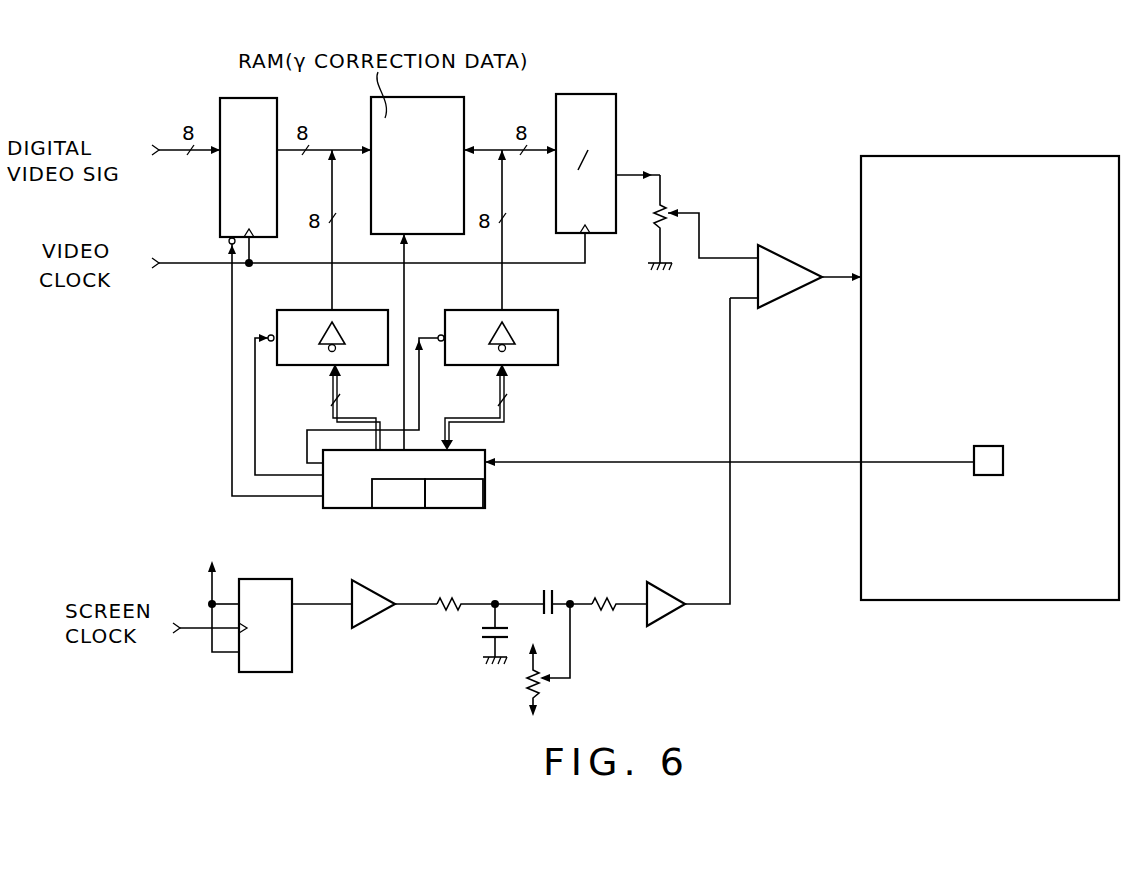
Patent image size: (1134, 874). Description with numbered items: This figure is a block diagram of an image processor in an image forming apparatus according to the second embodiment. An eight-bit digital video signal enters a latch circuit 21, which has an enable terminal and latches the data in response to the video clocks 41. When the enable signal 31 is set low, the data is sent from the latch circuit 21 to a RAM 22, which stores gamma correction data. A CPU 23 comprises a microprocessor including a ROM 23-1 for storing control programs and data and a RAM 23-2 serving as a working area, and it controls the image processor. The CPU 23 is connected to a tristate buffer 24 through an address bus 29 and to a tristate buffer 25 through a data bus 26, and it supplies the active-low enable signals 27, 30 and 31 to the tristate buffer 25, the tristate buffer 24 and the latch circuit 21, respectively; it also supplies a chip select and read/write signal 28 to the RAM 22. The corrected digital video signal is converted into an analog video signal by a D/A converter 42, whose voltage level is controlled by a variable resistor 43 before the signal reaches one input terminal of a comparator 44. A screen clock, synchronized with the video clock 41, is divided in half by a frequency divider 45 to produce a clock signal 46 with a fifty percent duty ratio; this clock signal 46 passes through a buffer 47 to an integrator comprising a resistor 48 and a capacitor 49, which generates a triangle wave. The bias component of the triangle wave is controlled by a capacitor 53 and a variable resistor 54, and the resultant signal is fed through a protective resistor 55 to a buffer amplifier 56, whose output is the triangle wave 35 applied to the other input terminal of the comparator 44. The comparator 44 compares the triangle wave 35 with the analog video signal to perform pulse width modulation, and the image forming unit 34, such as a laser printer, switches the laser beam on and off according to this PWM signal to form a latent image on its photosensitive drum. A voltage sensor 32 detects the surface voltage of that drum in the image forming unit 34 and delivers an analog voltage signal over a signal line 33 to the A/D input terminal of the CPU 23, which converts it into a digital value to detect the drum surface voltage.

The latch circuit 21 is at (255, 98).
The RAM 22 is at (433, 97).
The CPU 23 is at (343, 510).
The ROM 23-1 is at (397, 510).
The RAM 23-2 is at (463, 510).
The tristate buffer 24 is at (316, 310).
The tristate buffer 25 is at (528, 310).
The data bus 26 is at (512, 398).
The enable signal 27 is at (422, 402).
The chip select and read/write signal 28 is at (406, 282).
The address bus 29 is at (344, 408).
The enable signal 30 is at (256, 412).
The enable signal 31 is at (257, 500).
The voltage sensor 32 is at (988, 477).
The signal line 33 is at (812, 466).
The image forming unit 34 is at (993, 602).
The triangle wave 35 is at (732, 380).
The video clock 41 is at (180, 268).
The D/A converter 42 is at (590, 96).
The variable resistor 43 is at (670, 206).
The comparator 44 is at (783, 256).
The frequency divider 45 is at (270, 675).
The clock signal 46 is at (326, 608).
The buffer 47 is at (364, 624).
The resistor 48 is at (442, 612).
The capacitor 49 is at (478, 631).
The capacitor 53 is at (548, 588).
The variable resistor 54 is at (520, 686).
The protective resistor 55 is at (602, 590).
The buffer amplifier 56 is at (668, 592).